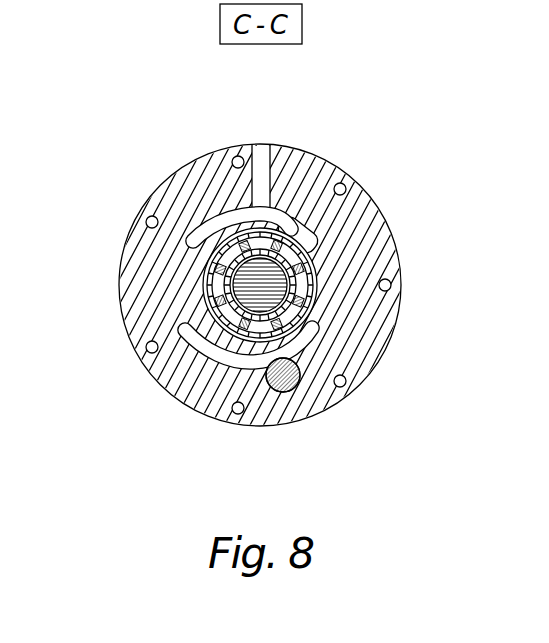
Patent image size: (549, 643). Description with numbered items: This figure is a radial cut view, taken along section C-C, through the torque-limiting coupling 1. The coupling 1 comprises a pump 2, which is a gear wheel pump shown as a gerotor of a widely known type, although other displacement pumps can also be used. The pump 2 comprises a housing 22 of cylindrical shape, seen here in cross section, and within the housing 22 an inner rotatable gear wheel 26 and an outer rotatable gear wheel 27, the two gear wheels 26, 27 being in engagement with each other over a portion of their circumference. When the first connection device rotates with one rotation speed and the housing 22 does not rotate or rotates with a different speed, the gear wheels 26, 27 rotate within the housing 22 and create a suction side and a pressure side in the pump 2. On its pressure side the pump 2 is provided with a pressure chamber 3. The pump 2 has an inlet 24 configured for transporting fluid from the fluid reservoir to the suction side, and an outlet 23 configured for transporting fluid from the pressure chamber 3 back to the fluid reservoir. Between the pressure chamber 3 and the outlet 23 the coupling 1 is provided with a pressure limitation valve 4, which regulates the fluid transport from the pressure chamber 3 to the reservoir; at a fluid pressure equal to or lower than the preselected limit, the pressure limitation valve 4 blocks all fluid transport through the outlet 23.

The torque-limiting coupling 1 is at (120, 143).
The pump 2 is at (396, 208).
The pressure chamber 3 is at (251, 358).
The pressure limitation valve 4 is at (290, 396).
The housing 22 is at (137, 312).
The outlet 23 is at (207, 358).
The inlet 24 is at (258, 146).
The inner rotatable gear wheel 26 is at (293, 205).
The outer rotatable gear wheel 27 is at (190, 240).